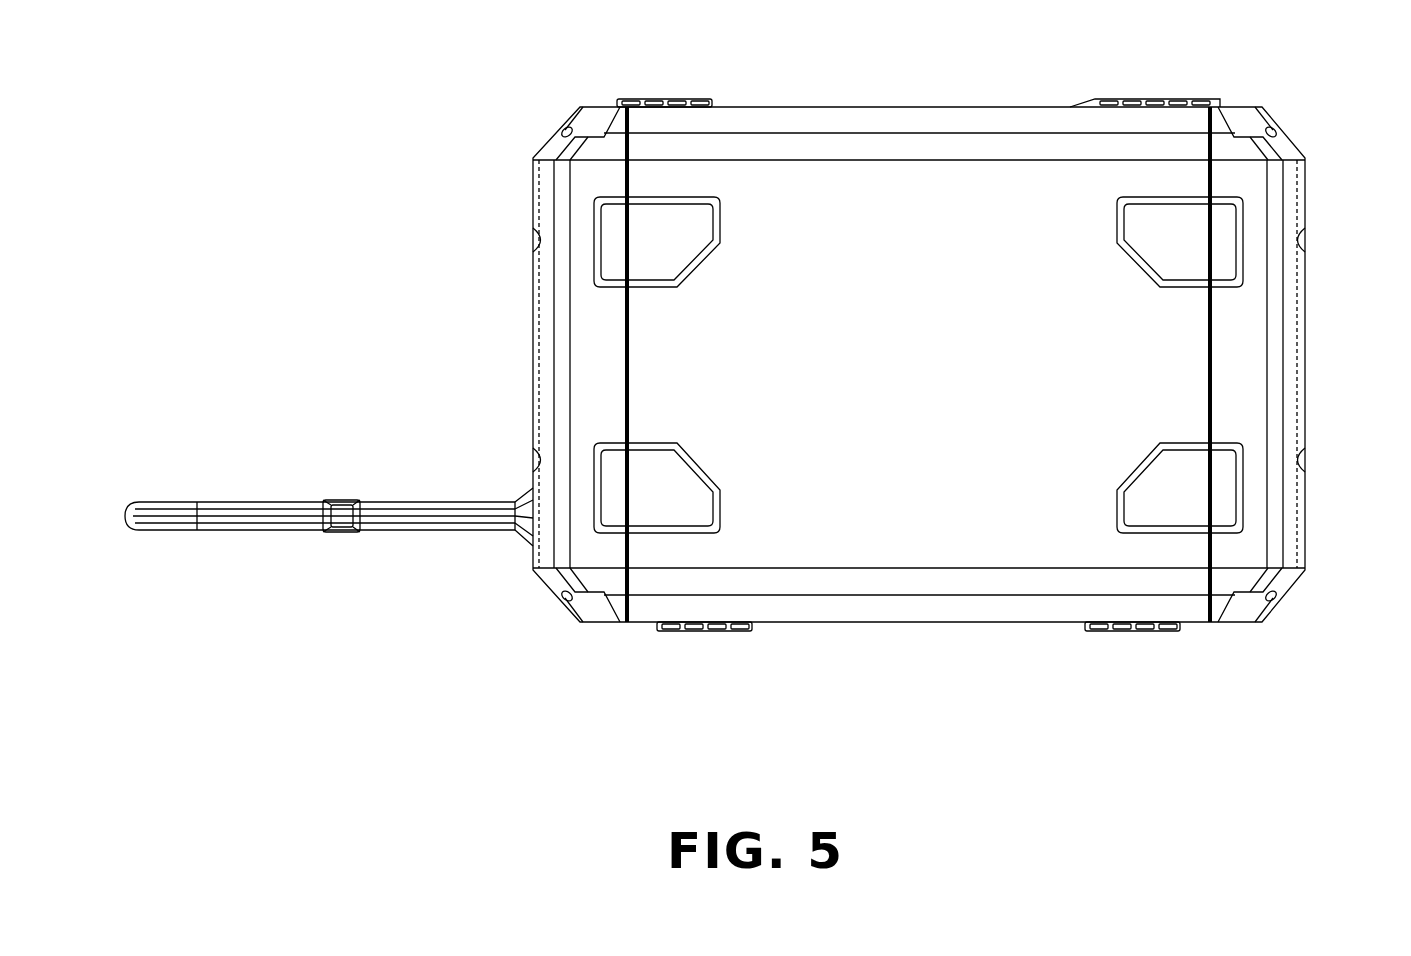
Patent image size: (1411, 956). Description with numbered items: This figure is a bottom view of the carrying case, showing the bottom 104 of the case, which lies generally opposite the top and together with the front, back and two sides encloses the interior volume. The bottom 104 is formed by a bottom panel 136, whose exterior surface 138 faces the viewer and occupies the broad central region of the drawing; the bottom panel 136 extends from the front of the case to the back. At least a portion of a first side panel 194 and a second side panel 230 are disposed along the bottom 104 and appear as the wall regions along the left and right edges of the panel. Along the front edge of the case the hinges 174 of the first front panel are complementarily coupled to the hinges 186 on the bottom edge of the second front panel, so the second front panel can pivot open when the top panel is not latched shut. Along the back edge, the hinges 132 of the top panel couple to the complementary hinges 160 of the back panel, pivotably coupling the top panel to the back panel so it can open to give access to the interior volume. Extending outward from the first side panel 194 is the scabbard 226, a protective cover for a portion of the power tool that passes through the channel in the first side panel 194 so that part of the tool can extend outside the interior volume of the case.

The bottom 104 is at (533, 118).
The hinges 132 is at (684, 645).
The bottom panel 136 is at (888, 195).
The exterior surface 138 is at (936, 374).
The hinges 160 is at (738, 645).
The hinges 174 is at (627, 97).
The hinges 186 is at (680, 95).
The first side panel 194 is at (597, 330).
The scabbard 226 is at (232, 492).
The second side panel 230 is at (1272, 312).